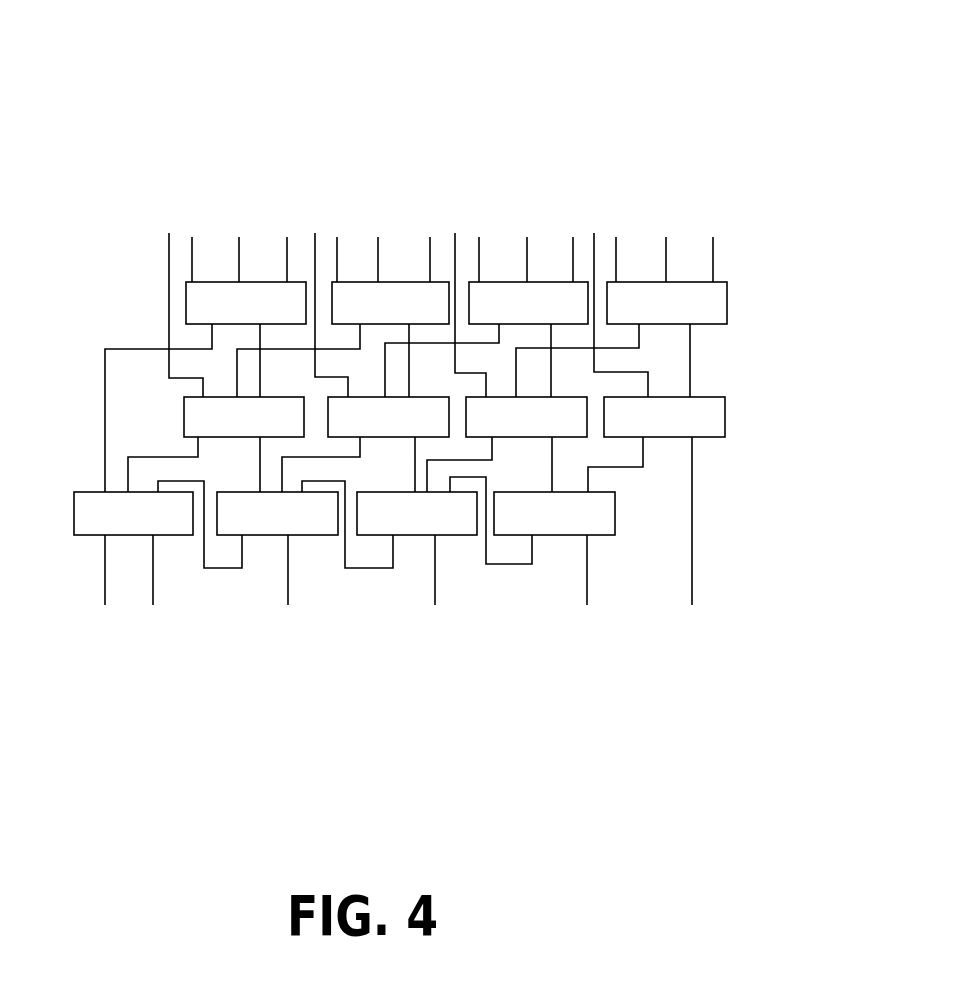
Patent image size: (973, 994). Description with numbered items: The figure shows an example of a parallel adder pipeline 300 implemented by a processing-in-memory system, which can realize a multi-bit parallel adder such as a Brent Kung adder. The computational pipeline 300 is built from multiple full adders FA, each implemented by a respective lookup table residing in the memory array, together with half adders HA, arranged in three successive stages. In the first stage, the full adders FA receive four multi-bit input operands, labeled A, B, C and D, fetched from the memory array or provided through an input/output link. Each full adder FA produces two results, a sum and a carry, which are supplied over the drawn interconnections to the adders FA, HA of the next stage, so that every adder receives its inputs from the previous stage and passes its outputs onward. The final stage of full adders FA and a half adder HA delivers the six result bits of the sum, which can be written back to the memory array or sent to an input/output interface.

The multi-operand adder circuit 300 is at (504, 326).
The full adder FA is at (400, 408).
The half adder HA is at (609, 466).